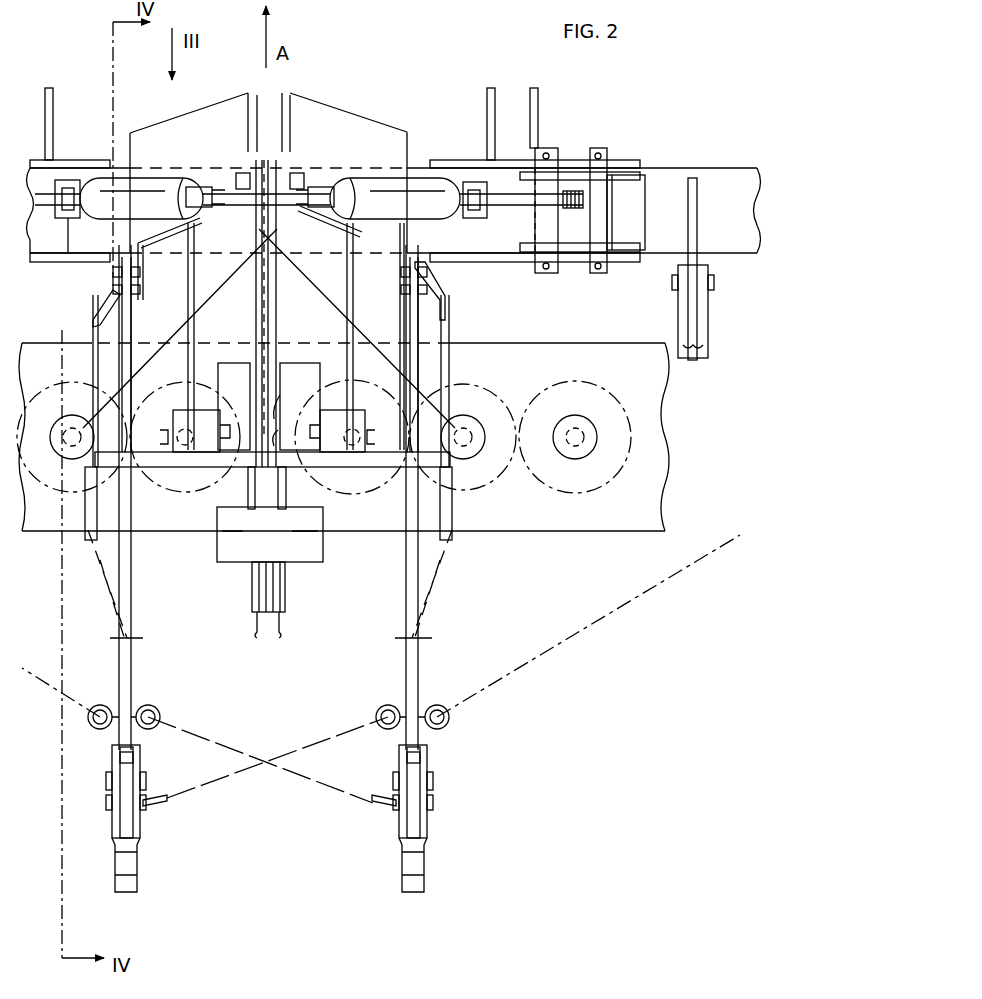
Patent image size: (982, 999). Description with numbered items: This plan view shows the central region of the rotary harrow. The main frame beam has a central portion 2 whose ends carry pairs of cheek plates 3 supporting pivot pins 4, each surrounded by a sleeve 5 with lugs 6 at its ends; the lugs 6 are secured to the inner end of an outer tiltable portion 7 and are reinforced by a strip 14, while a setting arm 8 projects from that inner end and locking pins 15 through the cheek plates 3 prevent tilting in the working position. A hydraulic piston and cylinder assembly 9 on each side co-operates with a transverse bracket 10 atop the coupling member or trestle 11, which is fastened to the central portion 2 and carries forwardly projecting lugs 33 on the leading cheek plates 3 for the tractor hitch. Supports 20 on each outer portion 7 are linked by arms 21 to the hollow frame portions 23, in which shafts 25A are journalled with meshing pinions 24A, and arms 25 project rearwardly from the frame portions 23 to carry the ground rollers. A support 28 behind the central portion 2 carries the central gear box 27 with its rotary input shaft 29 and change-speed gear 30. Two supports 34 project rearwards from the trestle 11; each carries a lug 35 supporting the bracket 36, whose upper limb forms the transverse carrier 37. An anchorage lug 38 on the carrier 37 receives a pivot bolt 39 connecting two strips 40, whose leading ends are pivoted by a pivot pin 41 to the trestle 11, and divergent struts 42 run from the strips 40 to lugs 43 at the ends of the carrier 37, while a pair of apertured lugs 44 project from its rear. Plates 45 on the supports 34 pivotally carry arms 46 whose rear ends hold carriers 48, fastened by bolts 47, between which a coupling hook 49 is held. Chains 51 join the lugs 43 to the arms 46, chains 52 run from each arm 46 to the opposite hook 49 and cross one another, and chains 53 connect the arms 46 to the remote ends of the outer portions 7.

The central portion 2 is at (128, 166).
The cheek plates 3 is at (90, 162).
The pivot pins 4 is at (554, 148).
The sleeve 5 is at (534, 220).
The lugs 6 is at (574, 172).
The outer tiltable portion 7 is at (736, 168).
The setting arm 8 is at (66, 216).
The piston and cylinder assembly 9 is at (148, 180).
The transverse bracket 10 is at (212, 184).
The coupling member or trestle 11 is at (370, 124).
The strip 14 is at (640, 190).
The locking pins 15 is at (602, 148).
The supports 20 is at (698, 210).
The arms 21 is at (710, 352).
The frame portions 23 is at (604, 344).
The pinion 24A is at (628, 374).
The arms 25 is at (278, 640).
The shafts 25A is at (572, 450).
The central gear box 27 is at (298, 364).
The support 28 is at (352, 296).
The rotary input shaft 29 is at (256, 323).
The change-speed gear 30 is at (323, 555).
The lugs 33 is at (54, 94).
The supports 34 is at (134, 322).
The lug 35 is at (90, 306).
The bracket 36 is at (452, 354).
The transverse carrier 37 is at (386, 470).
The anchorage lug 38 is at (280, 444).
The pivot bolt 39 is at (282, 408).
The strips 40 is at (268, 234).
The pivot pin 41 is at (304, 174).
The struts 42 is at (202, 298).
The lugs 43 is at (84, 510).
The apertured lugs 44 is at (222, 552).
The plates 45 is at (176, 418).
The arms 46 is at (134, 662).
The bolts 47 is at (106, 788).
The carriers 48 is at (134, 766).
The coupling hook 49 is at (138, 876).
The chains 51 is at (100, 576).
The chains 52 is at (336, 778).
The chains 53 is at (60, 660).